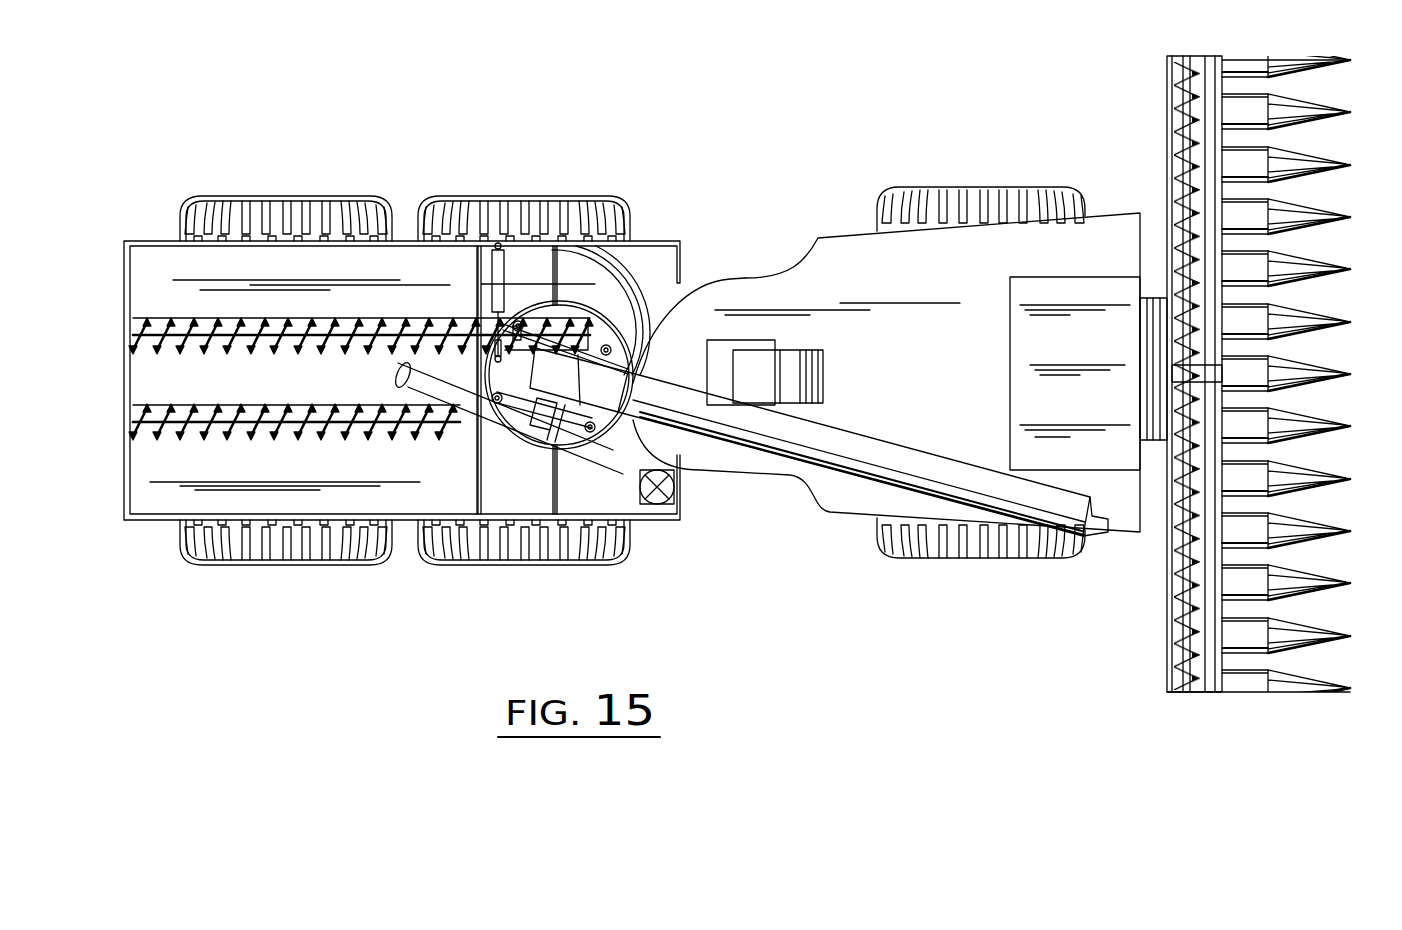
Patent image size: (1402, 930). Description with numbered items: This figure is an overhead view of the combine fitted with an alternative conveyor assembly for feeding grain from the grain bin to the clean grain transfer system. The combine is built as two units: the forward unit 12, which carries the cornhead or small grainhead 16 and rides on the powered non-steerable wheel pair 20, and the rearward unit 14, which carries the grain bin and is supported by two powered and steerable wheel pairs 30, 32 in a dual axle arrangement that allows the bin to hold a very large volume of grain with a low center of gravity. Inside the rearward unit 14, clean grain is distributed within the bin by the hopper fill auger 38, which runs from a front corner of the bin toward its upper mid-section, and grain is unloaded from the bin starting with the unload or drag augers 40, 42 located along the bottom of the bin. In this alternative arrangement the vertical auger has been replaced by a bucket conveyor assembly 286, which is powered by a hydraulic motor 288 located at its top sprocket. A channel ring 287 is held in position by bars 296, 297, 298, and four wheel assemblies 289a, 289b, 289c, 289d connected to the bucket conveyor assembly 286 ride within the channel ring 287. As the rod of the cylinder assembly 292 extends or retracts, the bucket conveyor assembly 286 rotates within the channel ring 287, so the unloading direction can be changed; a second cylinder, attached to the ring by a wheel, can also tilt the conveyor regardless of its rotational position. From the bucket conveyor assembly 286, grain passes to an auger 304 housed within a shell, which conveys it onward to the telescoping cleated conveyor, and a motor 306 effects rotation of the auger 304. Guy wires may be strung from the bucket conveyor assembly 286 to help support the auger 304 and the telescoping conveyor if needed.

The forward unit 12 is at (800, 262).
The rearward unit 14 is at (152, 240).
The cornhead or small grainhead 16 is at (1352, 318).
The powered non-steerable wheel pair 20 is at (1000, 186).
The powered and steerable wheel pair 30 is at (498, 196).
The powered and steerable wheel pair 32 is at (268, 196).
The hopper fill auger 38 is at (418, 398).
The unload or drag auger 40 is at (133, 334).
The unload or drag auger 42 is at (133, 421).
The bucket conveyor assembly 286 is at (645, 262).
The channel ring 287 is at (660, 268).
The hydraulic motor 288 is at (552, 432).
The wheel assembly 289a is at (688, 284).
The wheel assembly 289b is at (612, 458).
The wheel assembly 289c is at (482, 438).
The wheel assembly 289d is at (518, 328).
The cylinder assembly 292 is at (490, 262).
The bar 296 is at (557, 293).
The bar 297 is at (478, 303).
The bar 298 is at (555, 496).
The auger 304 is at (827, 430).
The motor 306 is at (1095, 530).